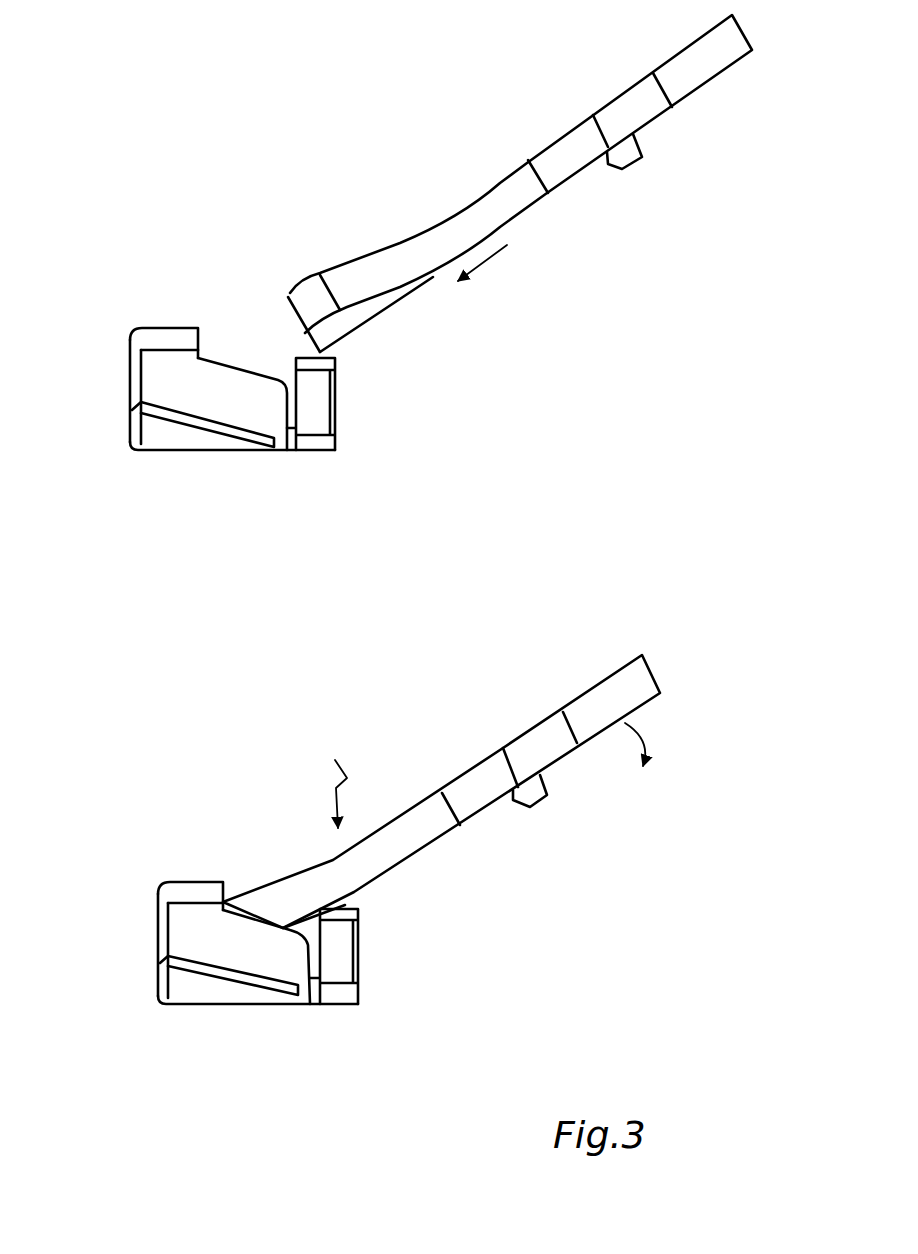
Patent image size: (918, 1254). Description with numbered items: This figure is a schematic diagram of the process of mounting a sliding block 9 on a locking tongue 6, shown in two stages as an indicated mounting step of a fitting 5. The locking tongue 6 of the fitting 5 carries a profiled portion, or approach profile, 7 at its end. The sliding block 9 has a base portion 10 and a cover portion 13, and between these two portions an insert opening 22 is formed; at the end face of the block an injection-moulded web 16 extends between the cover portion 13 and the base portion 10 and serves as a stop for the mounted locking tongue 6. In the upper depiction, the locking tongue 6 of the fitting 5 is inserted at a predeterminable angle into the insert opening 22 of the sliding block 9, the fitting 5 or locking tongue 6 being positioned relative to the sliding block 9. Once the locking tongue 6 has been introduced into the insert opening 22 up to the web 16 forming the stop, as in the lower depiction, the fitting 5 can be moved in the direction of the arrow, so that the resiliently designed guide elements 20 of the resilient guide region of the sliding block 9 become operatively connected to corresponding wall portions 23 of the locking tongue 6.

The fitting 5 is at (575, 157).
The locking tongue 6 is at (363, 277).
The profiled portion (approach profile) 7 is at (353, 322).
The sliding block 9 is at (142, 468).
The base portion 10 is at (240, 453).
The cover portion 13 is at (162, 327).
The web 16 is at (130, 373).
The resiliently designed guide elements 20 is at (357, 915).
The insert opening 22 is at (217, 347).
The wall portions of the locking tongue 23 is at (357, 766).